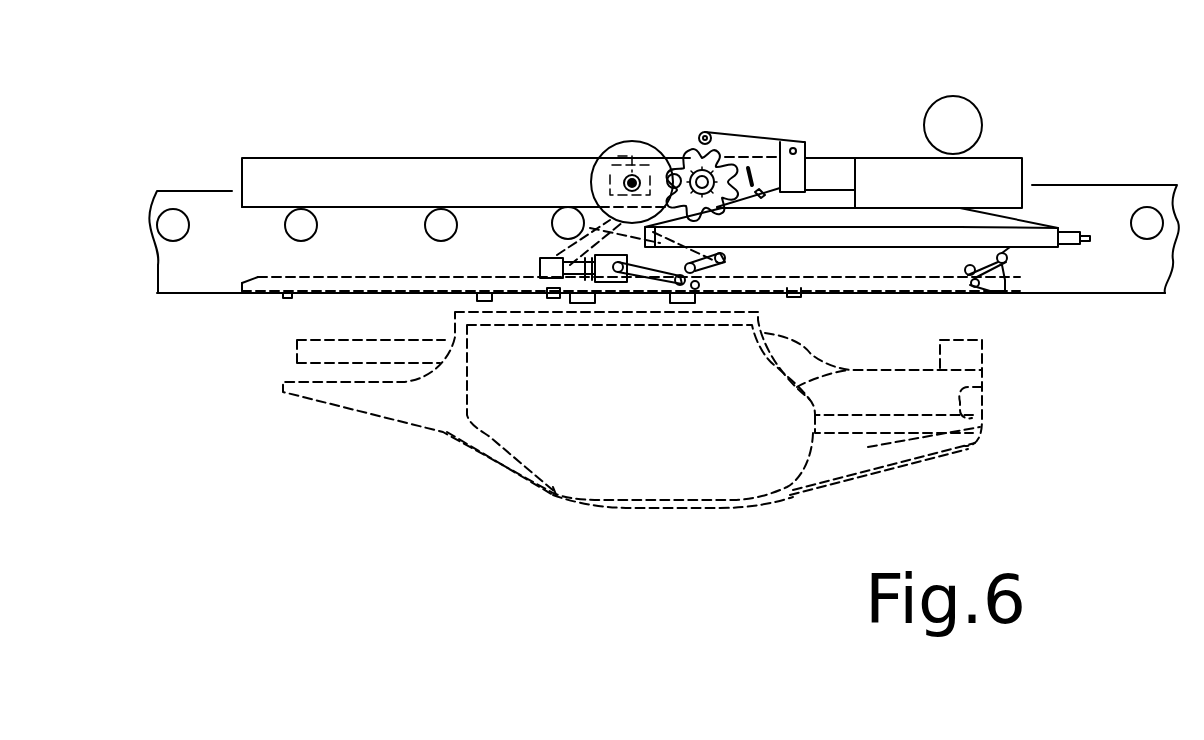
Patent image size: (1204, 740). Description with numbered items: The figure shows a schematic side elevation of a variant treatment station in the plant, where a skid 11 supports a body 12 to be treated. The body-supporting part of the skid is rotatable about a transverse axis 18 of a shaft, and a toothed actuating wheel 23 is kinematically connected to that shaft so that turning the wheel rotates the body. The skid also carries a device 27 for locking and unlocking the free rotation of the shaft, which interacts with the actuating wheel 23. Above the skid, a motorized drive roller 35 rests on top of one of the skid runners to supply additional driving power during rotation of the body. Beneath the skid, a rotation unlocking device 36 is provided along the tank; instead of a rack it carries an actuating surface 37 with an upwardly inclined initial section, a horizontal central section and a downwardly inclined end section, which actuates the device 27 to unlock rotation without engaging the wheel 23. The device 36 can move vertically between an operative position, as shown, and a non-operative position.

The skid 11 is at (295, 135).
The body 12 is at (403, 417).
The transverse axis 18 is at (624, 183).
The toothed actuating wheel 23 is at (643, 127).
The locking/unlocking device 27 is at (737, 122).
The motorized drive roller 35 is at (932, 133).
The rotation unlocking device 36 is at (1050, 208).
The actuating surface 37 is at (977, 178).